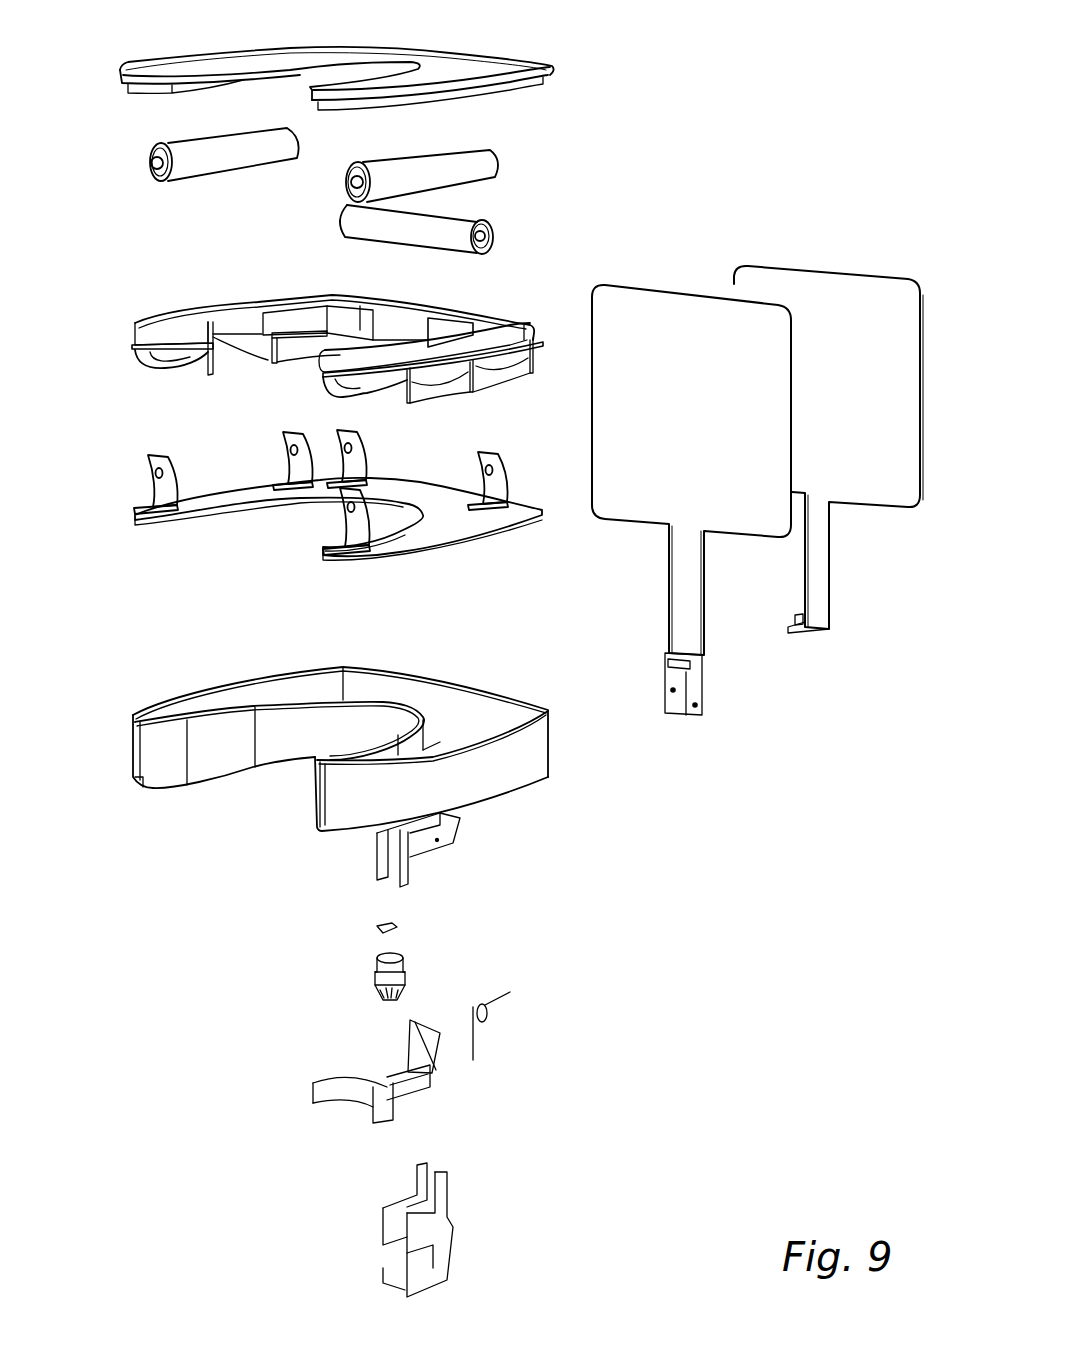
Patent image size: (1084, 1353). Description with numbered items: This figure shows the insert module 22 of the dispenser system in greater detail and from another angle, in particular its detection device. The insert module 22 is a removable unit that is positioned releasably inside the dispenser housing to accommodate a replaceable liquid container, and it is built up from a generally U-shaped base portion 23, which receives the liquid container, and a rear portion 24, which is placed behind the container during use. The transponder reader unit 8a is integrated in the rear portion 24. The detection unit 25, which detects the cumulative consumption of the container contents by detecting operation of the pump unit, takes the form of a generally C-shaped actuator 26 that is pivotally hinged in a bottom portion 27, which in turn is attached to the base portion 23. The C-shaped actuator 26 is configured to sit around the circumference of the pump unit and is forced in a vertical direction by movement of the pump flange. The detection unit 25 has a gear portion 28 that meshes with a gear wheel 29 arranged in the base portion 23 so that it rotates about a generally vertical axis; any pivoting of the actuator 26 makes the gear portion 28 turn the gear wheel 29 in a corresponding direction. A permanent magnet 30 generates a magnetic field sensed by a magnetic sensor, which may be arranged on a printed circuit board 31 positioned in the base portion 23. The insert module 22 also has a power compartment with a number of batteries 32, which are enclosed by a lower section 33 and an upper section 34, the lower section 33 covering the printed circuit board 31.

The insert module 22 is at (567, 1216).
The base portion 23 is at (130, 718).
The rear portion 24 is at (792, 540).
The detection unit 25 is at (330, 1117).
The C-shaped actuator 26 is at (312, 1095).
The bottom portion 27 is at (383, 1270).
The gear portion 28 is at (423, 1047).
The gear wheel 29 is at (373, 977).
The permanent magnet 30 is at (397, 927).
The printed circuit board 31 is at (140, 520).
The batteries 32 is at (157, 163).
The lower section 33 is at (152, 352).
The upper section 34 is at (155, 67).
The transponder reader unit 8a is at (828, 290).